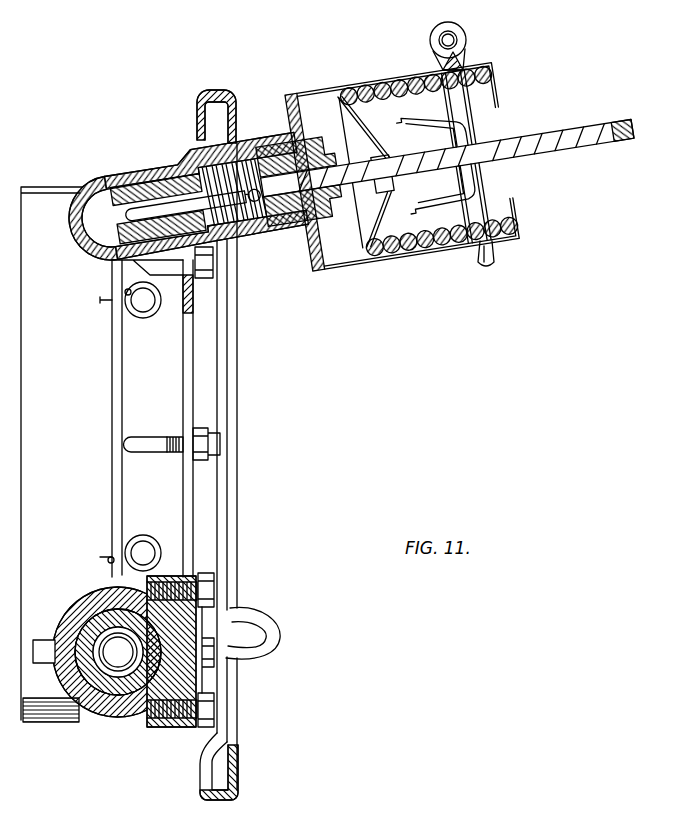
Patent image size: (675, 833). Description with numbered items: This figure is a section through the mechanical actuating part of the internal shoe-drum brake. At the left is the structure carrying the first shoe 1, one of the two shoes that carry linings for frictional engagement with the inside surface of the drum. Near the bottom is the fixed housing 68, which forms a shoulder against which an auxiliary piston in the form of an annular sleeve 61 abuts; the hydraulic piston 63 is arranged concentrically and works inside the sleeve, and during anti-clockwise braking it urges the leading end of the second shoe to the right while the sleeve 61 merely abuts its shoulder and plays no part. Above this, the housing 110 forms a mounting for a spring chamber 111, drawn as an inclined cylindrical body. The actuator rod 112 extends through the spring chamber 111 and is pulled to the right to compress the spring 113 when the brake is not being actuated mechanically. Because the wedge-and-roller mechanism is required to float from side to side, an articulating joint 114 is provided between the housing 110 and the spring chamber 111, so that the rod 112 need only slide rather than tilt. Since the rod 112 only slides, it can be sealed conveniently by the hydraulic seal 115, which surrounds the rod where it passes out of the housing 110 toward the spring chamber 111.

The first shoe 1 is at (65, 317).
The sleeve 61 is at (102, 723).
The hydraulic piston 63 is at (82, 713).
The fixed housing 68 is at (120, 668).
The housing 110 is at (234, 238).
The spring chamber 111 is at (385, 276).
The actuator rod 112 is at (587, 144).
The spring 113 is at (411, 248).
The articulating joint 114 is at (293, 230).
The hydraulic seal 115 is at (320, 218).